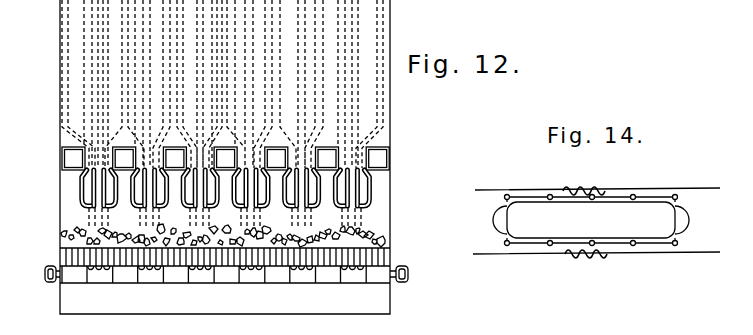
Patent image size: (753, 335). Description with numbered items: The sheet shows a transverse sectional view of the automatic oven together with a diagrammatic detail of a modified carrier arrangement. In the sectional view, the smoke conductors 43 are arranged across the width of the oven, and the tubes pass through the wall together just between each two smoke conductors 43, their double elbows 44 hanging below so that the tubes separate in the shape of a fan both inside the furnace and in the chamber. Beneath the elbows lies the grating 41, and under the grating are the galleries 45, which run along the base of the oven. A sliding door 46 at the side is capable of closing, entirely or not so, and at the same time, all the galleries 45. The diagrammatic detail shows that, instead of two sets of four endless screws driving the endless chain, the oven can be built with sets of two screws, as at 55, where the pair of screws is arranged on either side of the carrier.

In FIG. 12, the grating 41 is at (367, 257).
In FIG. 12, the smoke conductors 43 is at (381, 158).
In FIG. 12, the double elbows of the tubes 44 is at (82, 205).
In FIG. 12, the galleries 45 is at (98, 275).
In FIG. 12, the sliding door 46 is at (416, 275).
In FIG. 14, the set of two endless screws 55 is at (670, 188).